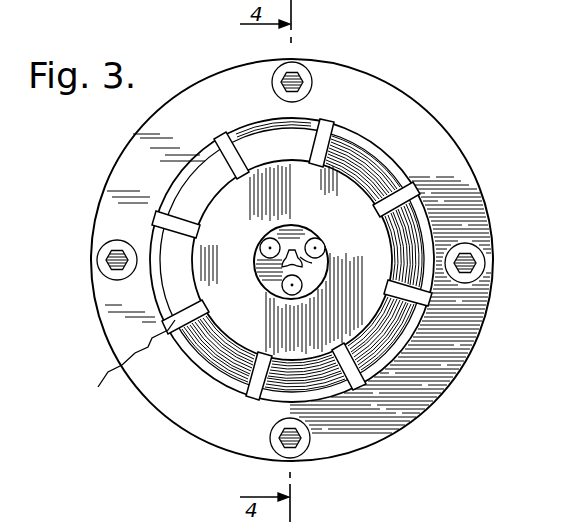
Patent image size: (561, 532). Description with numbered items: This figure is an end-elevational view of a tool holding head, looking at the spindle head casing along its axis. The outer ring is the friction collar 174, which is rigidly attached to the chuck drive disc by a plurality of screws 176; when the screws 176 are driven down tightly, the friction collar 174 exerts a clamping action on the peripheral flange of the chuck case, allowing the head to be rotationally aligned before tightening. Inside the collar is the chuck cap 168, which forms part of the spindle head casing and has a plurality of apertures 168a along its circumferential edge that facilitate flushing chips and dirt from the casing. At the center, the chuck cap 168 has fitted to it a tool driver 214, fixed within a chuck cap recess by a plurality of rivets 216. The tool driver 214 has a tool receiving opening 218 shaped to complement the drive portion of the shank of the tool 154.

The friction collar 174 is at (397, 107).
The screws 176 is at (296, 80).
The chuck cap 168 is at (207, 182).
The apertures 168a is at (252, 390).
The tool driver 214 is at (294, 228).
The rivets 216 is at (261, 241).
The tool 154 is at (286, 260).
The tool receiving opening 218 is at (306, 261).